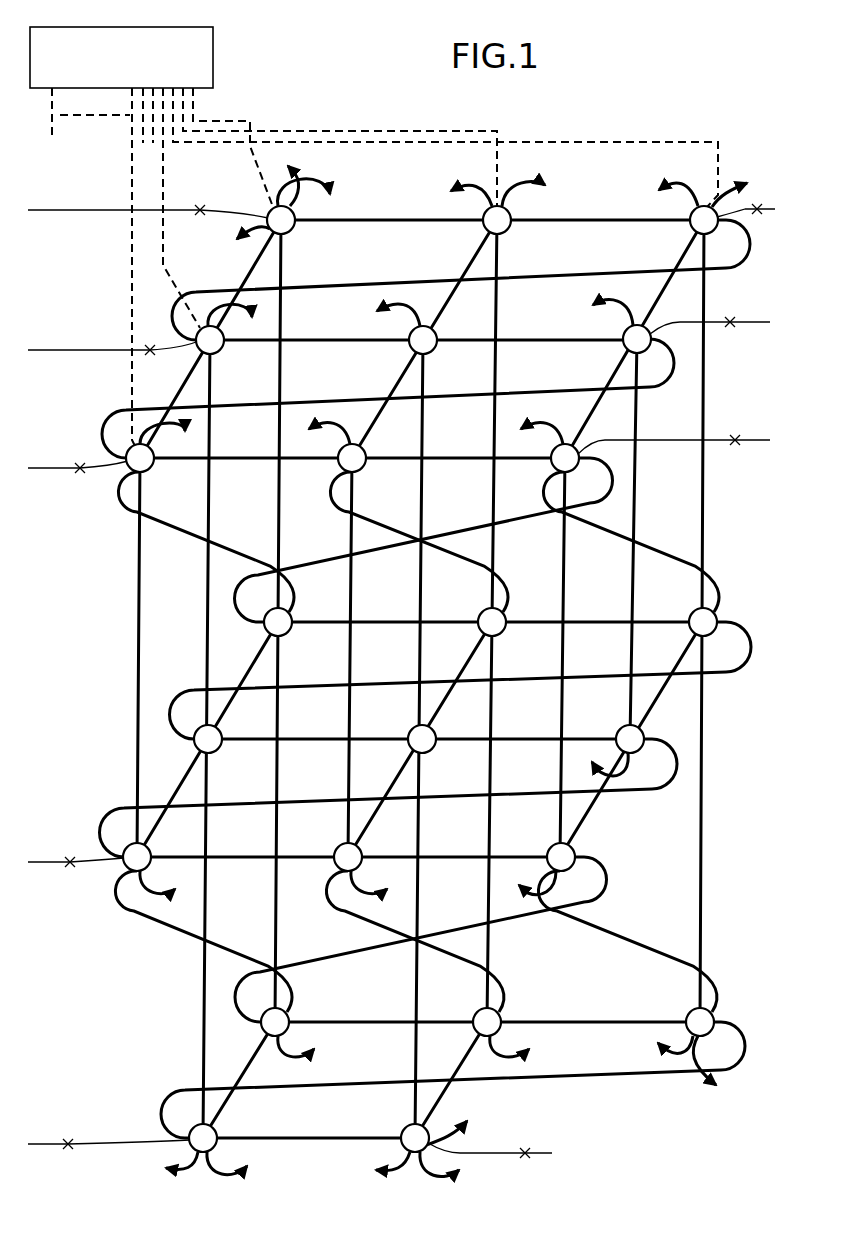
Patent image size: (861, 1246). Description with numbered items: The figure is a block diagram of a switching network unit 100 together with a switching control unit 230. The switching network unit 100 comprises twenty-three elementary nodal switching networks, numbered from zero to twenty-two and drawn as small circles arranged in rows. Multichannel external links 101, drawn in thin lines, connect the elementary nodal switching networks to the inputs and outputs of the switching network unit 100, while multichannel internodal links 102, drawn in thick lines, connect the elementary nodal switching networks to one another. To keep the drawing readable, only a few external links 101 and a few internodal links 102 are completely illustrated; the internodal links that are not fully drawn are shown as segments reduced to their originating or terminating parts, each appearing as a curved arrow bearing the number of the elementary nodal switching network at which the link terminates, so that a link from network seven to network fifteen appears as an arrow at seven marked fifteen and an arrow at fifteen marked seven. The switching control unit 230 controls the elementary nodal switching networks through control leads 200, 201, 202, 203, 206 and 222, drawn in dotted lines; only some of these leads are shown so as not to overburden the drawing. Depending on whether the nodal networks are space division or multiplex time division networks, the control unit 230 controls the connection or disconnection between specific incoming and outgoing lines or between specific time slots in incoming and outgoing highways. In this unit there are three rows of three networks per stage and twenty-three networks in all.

The switching network unit 100 is at (621, 129).
The multichannel external links 101 is at (72, 208).
The multichannel internodal links 102 is at (357, 280).
The control lead 200 is at (224, 121).
The control lead 201 is at (276, 131).
The control lead 202 is at (350, 141).
The control lead 203 is at (164, 186).
The control lead 206 is at (132, 180).
The control lead 222 is at (71, 114).
The switching control unit 230 is at (215, 61).